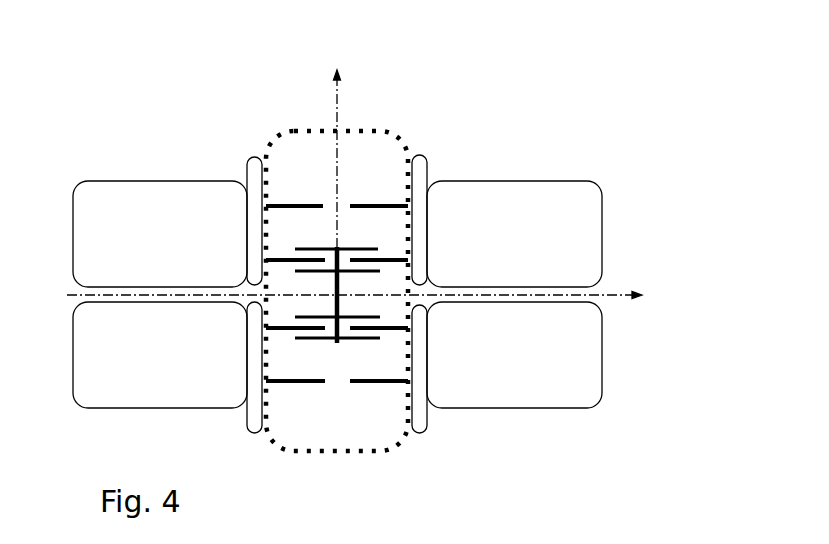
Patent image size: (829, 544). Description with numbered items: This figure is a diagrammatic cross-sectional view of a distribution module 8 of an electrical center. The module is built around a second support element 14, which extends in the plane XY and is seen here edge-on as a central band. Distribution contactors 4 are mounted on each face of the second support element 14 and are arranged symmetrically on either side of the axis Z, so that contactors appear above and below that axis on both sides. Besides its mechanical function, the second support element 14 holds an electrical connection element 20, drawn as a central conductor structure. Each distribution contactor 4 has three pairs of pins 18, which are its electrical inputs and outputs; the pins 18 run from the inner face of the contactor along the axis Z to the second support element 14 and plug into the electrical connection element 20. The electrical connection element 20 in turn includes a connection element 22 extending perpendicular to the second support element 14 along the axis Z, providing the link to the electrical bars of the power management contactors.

The distribution contactor 4 is at (514, 355).
The distribution module 8 is at (617, 177).
The second support element 14 is at (292, 130).
The pins 18 is at (300, 205).
The electrical connection element 20 is at (368, 234).
The connection element 22 is at (67, 295).